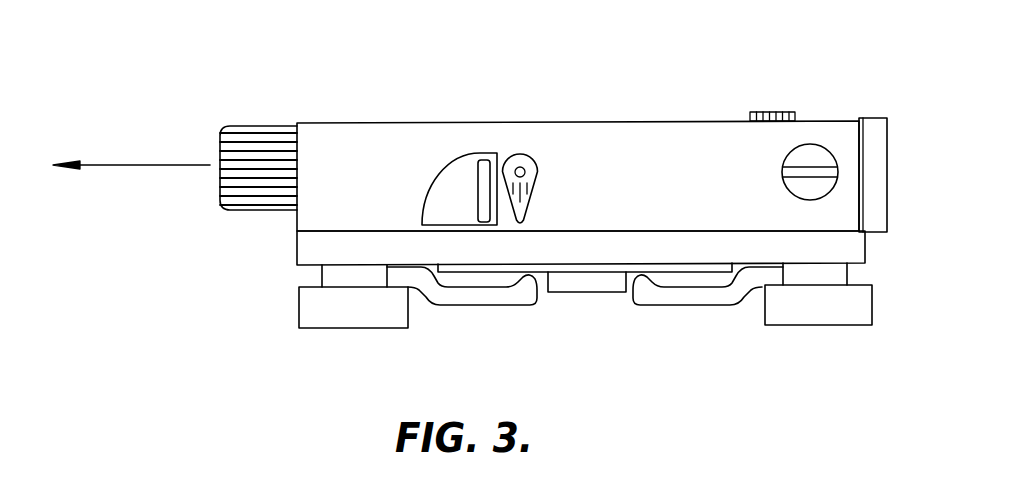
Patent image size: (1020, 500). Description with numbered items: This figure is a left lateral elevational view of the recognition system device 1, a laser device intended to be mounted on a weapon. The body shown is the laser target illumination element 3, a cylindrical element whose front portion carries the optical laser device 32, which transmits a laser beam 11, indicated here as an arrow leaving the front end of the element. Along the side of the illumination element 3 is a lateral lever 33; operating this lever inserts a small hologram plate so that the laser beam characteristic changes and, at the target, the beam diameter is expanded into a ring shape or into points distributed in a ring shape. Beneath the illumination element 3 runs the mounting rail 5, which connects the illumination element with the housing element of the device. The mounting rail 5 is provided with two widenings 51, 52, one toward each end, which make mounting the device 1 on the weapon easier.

The recognition system device 1 is at (488, 189).
The laser target illumination element 3 is at (693, 140).
The mounting rail 5 is at (845, 247).
The laser beam 11 is at (148, 163).
The optical laser device 32 is at (255, 197).
The lateral lever 33 is at (481, 195).
The widening 51 is at (387, 310).
The widening 52 is at (838, 307).